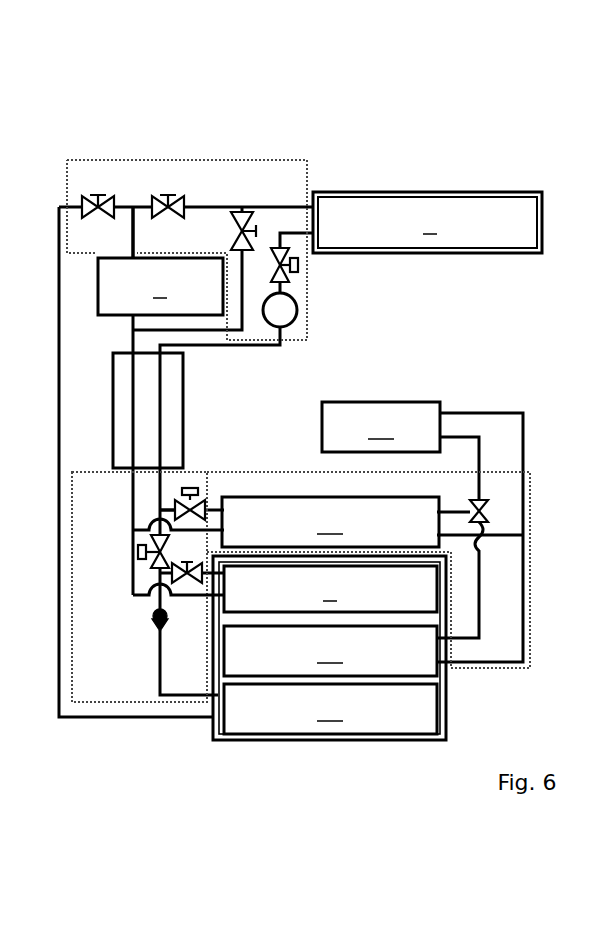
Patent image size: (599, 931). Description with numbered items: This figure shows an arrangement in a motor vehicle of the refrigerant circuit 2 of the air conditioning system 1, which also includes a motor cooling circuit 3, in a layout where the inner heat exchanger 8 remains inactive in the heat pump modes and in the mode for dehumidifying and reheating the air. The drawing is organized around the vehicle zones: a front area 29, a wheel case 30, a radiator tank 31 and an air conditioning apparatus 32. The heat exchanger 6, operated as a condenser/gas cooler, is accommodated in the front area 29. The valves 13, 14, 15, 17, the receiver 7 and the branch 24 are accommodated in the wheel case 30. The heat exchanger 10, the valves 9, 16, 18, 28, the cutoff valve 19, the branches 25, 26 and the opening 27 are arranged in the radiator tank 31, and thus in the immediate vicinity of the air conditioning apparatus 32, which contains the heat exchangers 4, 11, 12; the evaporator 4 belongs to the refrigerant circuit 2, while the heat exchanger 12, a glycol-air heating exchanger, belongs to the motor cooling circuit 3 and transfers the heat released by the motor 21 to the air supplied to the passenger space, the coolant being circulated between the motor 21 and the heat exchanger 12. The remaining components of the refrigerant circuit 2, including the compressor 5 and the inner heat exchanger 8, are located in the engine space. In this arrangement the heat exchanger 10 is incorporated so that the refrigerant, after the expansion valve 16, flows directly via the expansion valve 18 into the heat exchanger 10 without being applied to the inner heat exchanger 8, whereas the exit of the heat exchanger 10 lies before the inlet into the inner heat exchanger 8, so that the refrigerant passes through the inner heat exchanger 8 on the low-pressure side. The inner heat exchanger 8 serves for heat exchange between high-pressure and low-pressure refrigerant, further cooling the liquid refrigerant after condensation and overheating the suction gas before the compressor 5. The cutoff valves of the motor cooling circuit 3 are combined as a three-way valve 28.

The air conditioning system 1 is at (542, 101).
The refrigerant circuit 2 is at (256, 402).
The motor cooling circuit 3 is at (484, 404).
The evaporator 4 is at (330, 589).
The compressor 5 is at (160, 286).
The heat exchanger 6 is at (427, 222).
The receiver 7 is at (283, 310).
The inner heat exchanger 8 is at (172, 425).
The valve 9 is at (162, 583).
The heat exchanger 10 is at (330, 522).
The heat exchanger 11 is at (330, 709).
The heat exchanger 12 is at (330, 651).
The valve 13 is at (99, 193).
The valve 14 is at (169, 193).
The valve 15 is at (247, 212).
The expansion valve 16 is at (157, 562).
The valve 17 is at (290, 278).
The expansion valve 18 is at (203, 503).
The cutoff valve 19 is at (153, 622).
The motor 21 is at (381, 427).
The branch 24 is at (133, 207).
The branch 25 is at (162, 508).
The branch 26 is at (158, 578).
The opening 27 is at (135, 530).
The three-way valve 28 is at (483, 505).
The front area 29 is at (420, 192).
The wheel case 30 is at (234, 160).
The radiator tank 31 is at (135, 703).
The air conditioning apparatus 32 is at (272, 738).